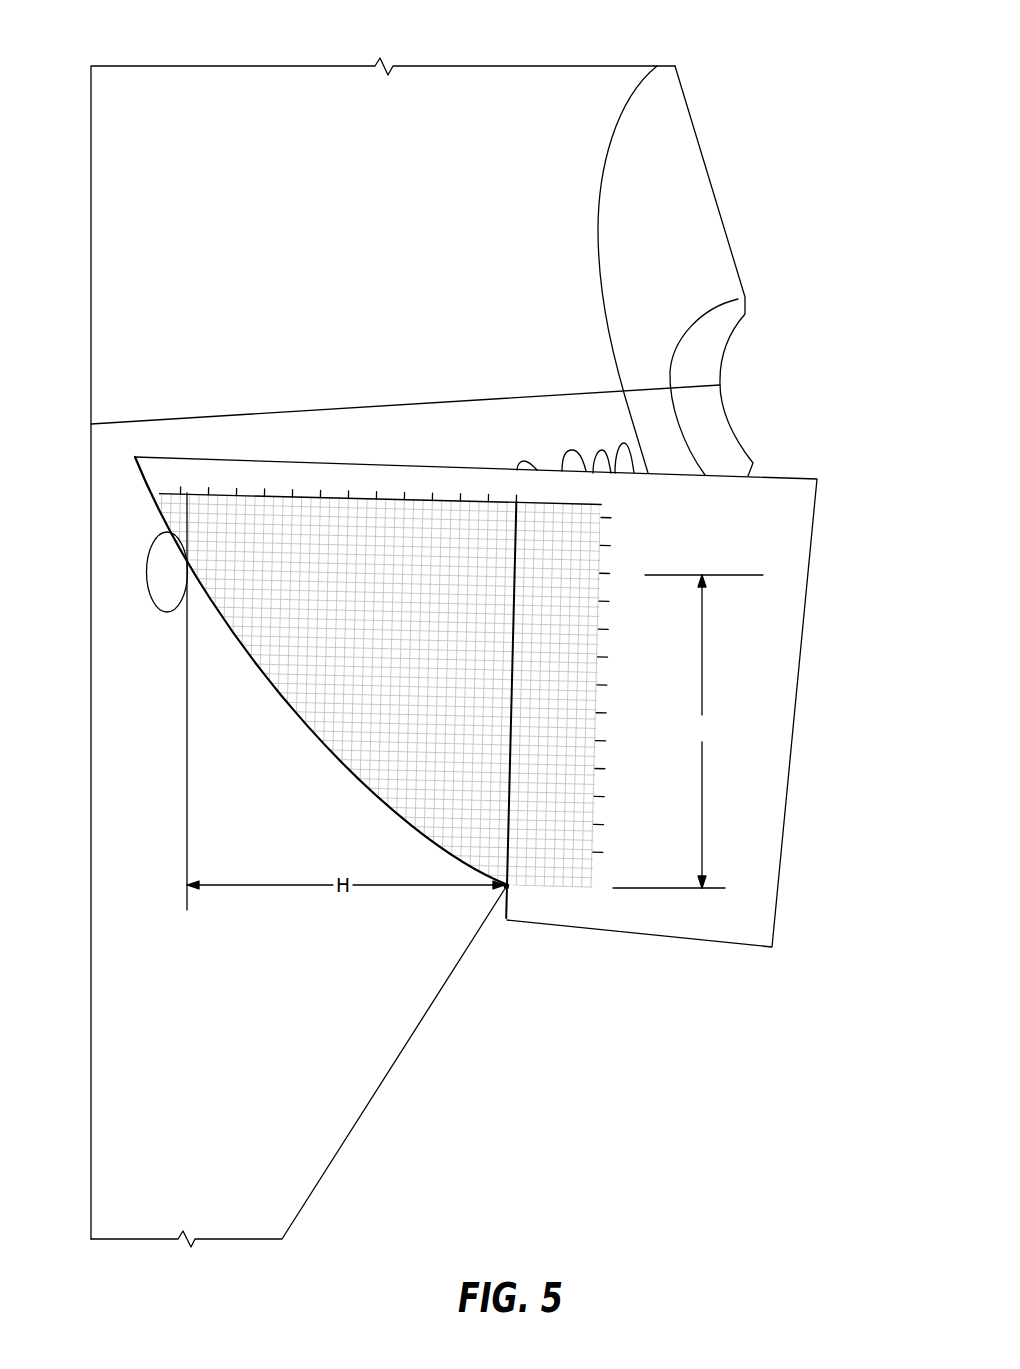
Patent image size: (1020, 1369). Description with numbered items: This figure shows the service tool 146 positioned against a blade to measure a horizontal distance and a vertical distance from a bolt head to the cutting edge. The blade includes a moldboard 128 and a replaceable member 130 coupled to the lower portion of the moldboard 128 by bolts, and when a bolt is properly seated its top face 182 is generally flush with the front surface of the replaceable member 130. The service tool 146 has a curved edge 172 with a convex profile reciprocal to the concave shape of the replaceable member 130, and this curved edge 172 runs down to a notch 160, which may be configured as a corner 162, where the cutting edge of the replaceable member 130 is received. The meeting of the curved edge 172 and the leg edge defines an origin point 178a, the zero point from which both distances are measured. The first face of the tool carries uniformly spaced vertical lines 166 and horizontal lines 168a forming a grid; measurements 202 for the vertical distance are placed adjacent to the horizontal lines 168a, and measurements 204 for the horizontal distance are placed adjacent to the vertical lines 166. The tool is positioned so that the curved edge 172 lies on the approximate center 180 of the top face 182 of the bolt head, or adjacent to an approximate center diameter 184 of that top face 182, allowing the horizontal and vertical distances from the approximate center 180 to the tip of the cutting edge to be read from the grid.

The moldboard 128 is at (489, 110).
The replaceable member 130 is at (330, 1123).
The service tool 146 is at (484, 684).
The notch 160 is at (408, 911).
The corner 162 is at (503, 888).
The vertical lines 166 is at (380, 460).
The first plurality of horizontal lines 168a is at (654, 541).
The curved edge 172 is at (307, 727).
The origin point 178a is at (506, 890).
The approximate center 180 is at (112, 537).
The top face 182 is at (112, 537).
The approximate center diameter 184 is at (178, 557).
The measurements for the vertical distance 202 is at (645, 574).
The measurements for the horizontal distance 204 is at (187, 493).